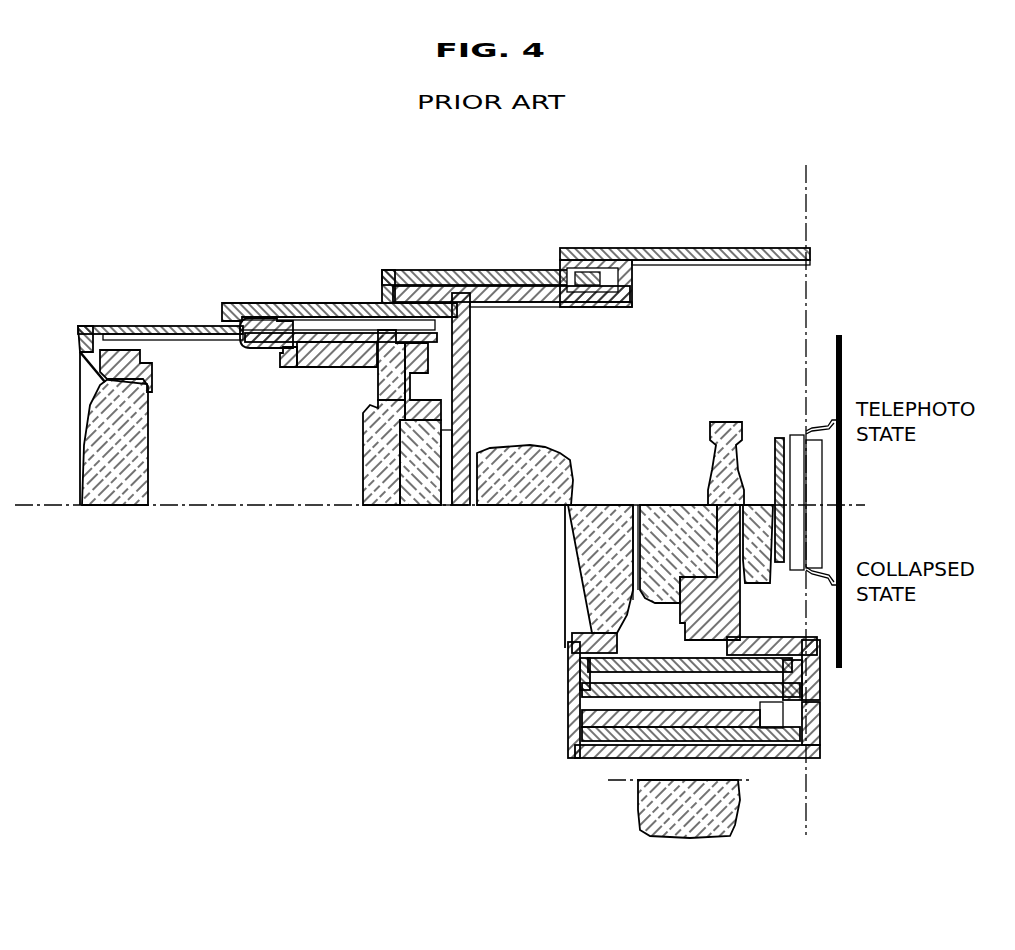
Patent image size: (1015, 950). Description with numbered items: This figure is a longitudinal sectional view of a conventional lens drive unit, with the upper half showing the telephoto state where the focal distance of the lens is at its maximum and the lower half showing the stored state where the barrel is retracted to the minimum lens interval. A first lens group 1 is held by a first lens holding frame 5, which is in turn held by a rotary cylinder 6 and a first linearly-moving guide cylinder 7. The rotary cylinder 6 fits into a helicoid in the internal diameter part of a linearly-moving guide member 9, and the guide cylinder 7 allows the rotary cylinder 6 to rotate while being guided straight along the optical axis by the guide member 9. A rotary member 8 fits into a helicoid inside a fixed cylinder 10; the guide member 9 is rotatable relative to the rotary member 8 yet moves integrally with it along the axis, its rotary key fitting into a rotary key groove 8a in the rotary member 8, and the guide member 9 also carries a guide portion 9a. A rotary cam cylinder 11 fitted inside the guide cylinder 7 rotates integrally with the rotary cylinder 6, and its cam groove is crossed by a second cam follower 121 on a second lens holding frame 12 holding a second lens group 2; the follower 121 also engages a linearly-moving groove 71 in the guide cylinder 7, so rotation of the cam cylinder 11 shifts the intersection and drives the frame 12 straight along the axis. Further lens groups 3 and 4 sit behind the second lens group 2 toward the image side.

The first lens group 1 is at (116, 510).
The second lens group 2 is at (409, 508).
The third lens group 3 is at (516, 508).
The fourth lens group 4 is at (724, 423).
The first lens holding frame 5 is at (151, 326).
The rotary cylinder 6 is at (275, 302).
The first linearly-moving guide cylinder 7 is at (248, 343).
The linearly-moving groove 71 is at (290, 365).
The rotary member 8 is at (448, 271).
The rotary key groove 8a is at (592, 290).
The linearly-moving guide member 9 is at (632, 289).
The guide portion of linear guide barrel 9a is at (555, 304).
The fixed cylinder 10 is at (705, 249).
The rotary cam cylinder 11 is at (318, 345).
The second lens holding frame 12 is at (378, 396).
The second cam follower 121 is at (386, 398).